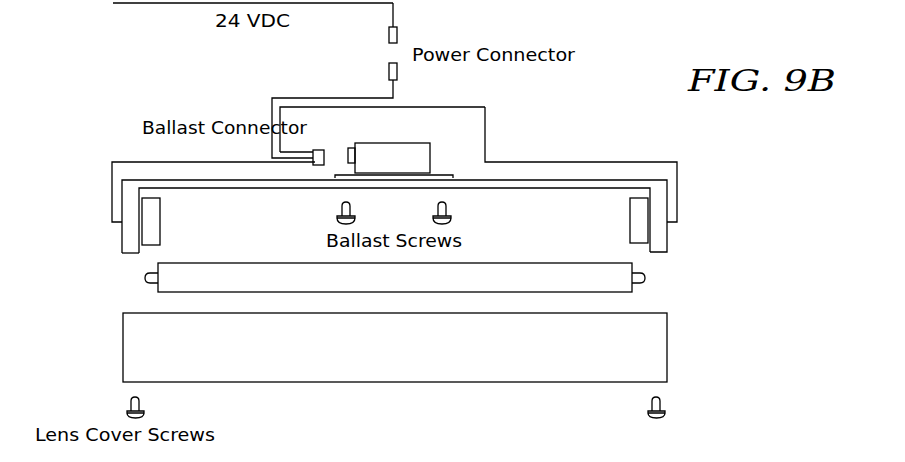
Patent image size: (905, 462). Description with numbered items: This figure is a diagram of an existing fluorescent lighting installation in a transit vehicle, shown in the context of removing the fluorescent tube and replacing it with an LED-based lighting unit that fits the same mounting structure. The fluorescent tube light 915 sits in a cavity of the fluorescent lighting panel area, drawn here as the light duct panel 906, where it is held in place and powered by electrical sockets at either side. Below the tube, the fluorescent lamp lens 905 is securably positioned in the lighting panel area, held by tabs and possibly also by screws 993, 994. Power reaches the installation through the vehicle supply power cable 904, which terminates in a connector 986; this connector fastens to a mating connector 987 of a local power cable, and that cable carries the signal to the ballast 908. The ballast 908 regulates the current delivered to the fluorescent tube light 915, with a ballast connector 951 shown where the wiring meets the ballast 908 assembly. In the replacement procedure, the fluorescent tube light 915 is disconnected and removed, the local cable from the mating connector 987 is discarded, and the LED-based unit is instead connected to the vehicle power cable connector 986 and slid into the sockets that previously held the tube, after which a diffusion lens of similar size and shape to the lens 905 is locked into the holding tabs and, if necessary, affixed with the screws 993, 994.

The vehicle supply power cable 904 is at (153, 3).
The connector 986 is at (398, 32).
The mating connector 987 is at (399, 72).
The ballast connector 951 is at (320, 150).
The ballast 908 is at (431, 155).
The light duct panel 906 is at (585, 188).
The fluorescent tube light 915 is at (502, 263).
The fluorescent lamp lens 905 is at (508, 382).
The screw 993 is at (126, 413).
The screw 994 is at (666, 413).